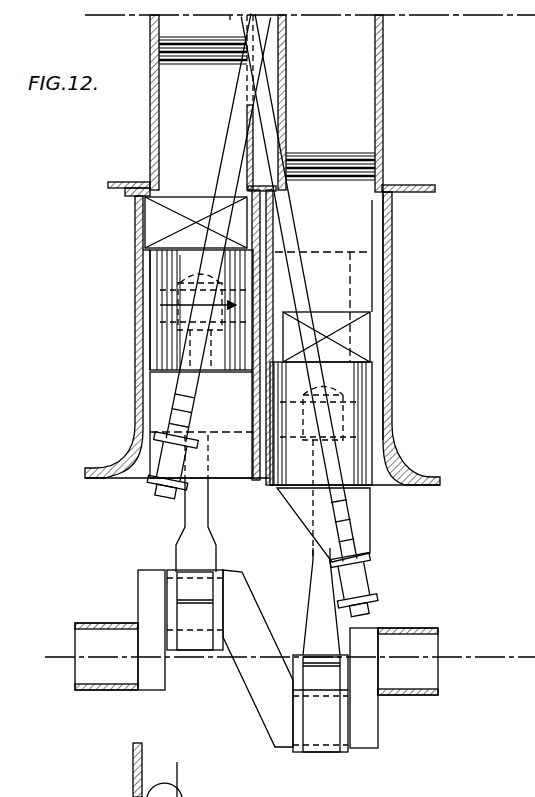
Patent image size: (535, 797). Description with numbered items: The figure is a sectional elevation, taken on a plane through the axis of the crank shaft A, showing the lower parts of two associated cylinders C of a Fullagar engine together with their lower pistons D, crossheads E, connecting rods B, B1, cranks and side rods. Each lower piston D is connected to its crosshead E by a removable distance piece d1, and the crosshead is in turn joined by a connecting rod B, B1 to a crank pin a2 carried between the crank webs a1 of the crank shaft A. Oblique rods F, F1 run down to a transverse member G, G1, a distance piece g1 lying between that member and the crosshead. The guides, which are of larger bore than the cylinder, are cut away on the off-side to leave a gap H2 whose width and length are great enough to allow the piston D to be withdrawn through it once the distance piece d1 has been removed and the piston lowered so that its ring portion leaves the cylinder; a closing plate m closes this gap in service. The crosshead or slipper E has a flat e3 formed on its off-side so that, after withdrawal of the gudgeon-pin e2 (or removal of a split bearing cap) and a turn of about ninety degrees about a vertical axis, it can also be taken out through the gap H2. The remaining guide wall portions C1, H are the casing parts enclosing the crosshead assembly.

The cylinder C is at (150, 113).
The lower piston D is at (165, 143).
The casing / crankcase wall C1 is at (137, 213).
The removable distance piece d1 is at (183, 197).
The crosshead E is at (165, 352).
The crosshead gudgeon-pin e2 is at (178, 285).
The flat e3 is at (157, 262).
The gap H2 is at (148, 300).
The closing plate m is at (140, 334).
The chamber wall H is at (392, 340).
The distance piece g1 is at (160, 385).
The transverse member G is at (163, 468).
The fuel injector nozzle (second cylinder) G1 is at (358, 580).
The connecting rod B is at (200, 509).
The connecting rod (second cylinder) B1 is at (318, 578).
The crank web a1 is at (146, 577).
The crank pin a2 is at (194, 628).
The crank shaft A is at (86, 630).
The oblique rod F is at (178, 770).
The fuel pipe F1 is at (220, 10).